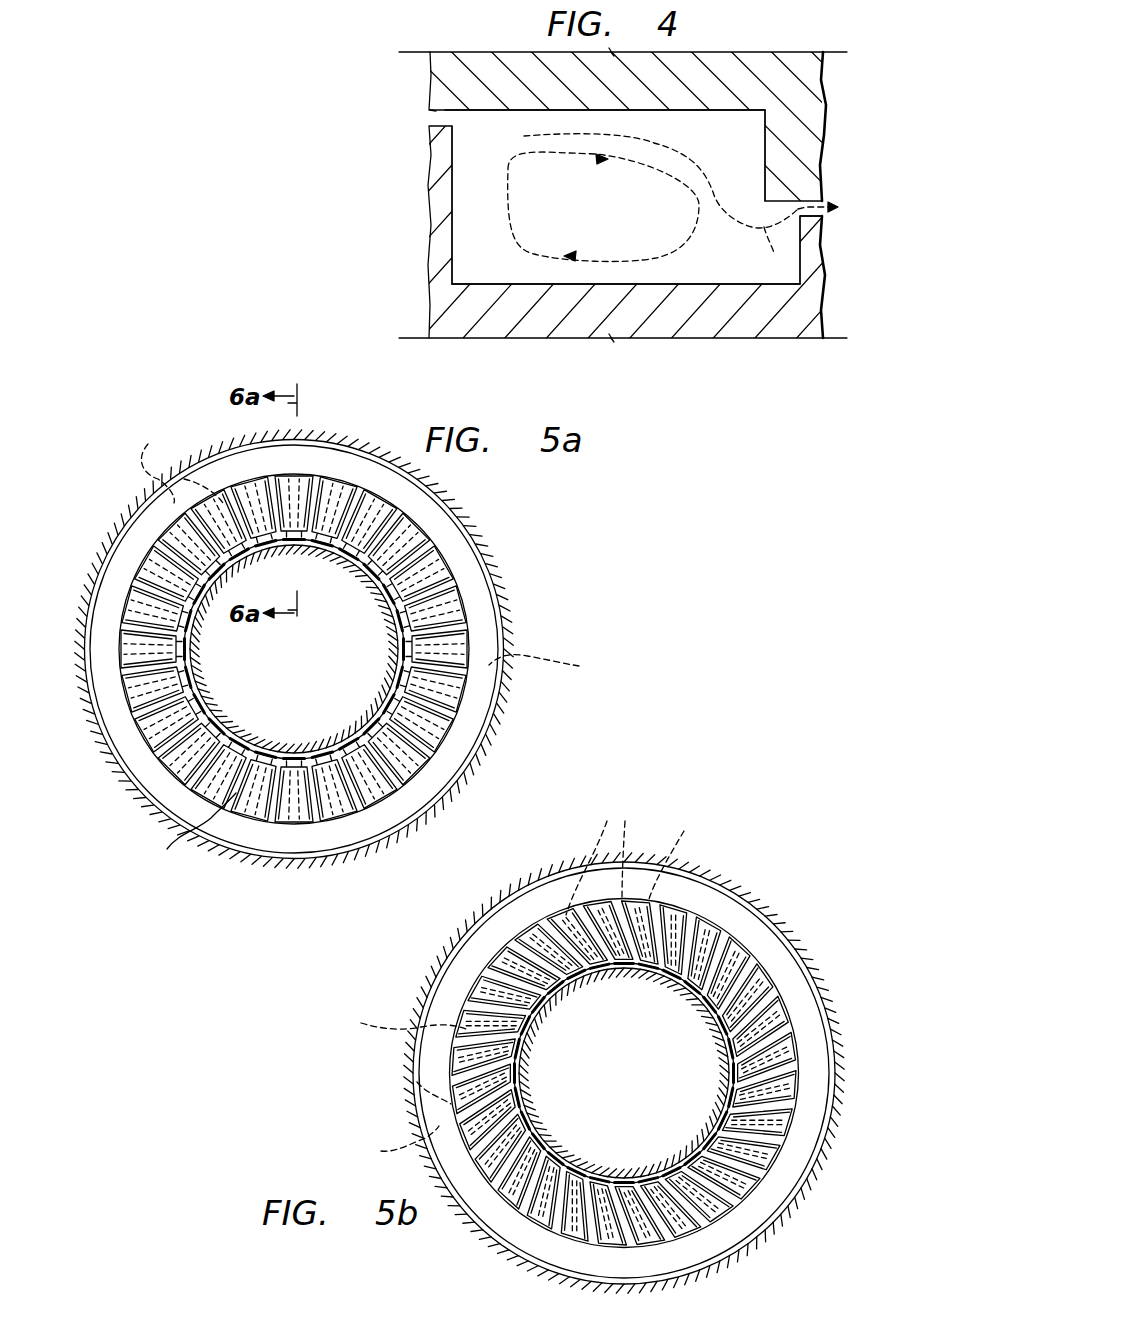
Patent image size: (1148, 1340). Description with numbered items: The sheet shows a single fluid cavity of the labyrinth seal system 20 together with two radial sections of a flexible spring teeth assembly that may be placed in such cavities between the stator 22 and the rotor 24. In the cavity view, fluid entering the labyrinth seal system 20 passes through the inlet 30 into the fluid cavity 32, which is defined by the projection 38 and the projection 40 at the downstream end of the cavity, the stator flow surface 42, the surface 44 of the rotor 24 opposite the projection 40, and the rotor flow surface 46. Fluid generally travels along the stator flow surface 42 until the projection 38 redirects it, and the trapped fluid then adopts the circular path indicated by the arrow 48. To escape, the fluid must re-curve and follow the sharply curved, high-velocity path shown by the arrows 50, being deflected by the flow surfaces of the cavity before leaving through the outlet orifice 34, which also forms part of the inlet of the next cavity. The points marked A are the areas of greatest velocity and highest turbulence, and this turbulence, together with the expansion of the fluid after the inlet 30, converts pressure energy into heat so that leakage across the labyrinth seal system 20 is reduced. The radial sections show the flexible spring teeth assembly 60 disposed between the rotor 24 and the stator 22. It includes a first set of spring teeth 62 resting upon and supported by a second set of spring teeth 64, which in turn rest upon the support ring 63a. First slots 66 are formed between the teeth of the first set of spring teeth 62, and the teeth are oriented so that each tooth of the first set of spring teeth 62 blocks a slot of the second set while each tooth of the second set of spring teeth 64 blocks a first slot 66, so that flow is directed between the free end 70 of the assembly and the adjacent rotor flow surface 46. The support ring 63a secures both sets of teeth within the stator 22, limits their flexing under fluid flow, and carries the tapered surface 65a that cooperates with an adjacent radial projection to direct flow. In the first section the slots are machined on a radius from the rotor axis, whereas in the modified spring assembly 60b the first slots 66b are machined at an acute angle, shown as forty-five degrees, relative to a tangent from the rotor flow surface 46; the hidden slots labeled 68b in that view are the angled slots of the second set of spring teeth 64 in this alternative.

In FIG. 4, the labyrinth seal system 20 is at (764, 356).
In FIG. 4, the stator 22 is at (750, 56).
In FIG. 5A, the stator 22 is at (497, 723).
In FIG. 5B, the stator 22 is at (839, 1078).
In FIG. 4, the rotor 24 is at (684, 339).
In FIG. 5A, the rotor 24 is at (278, 662).
In FIG. 5B, the rotor 24 is at (608, 1082).
In FIG. 4, the inlet 30 is at (429, 110).
In FIG. 4, the fluid cavity 32 is at (550, 209).
In FIG. 4, the outlet orifice 34 is at (825, 197).
In FIG. 4, the projection 38 is at (764, 136).
In FIG. 4, the projection 40 is at (806, 251).
In FIG. 4, the stator flow surface 42 is at (486, 111).
In FIG. 4, the surface 44 is at (451, 199).
In FIG. 4, the rotor flow surface 46 is at (487, 283).
In FIG. 5A, the rotor flow surface 46 is at (323, 543).
In FIG. 5B, the rotor flow surface 46 is at (653, 975).
In FIG. 4, the arrow 48 is at (622, 256).
In FIG. 4, the arrows 50 is at (744, 227).
In FIG. 5A, the flexible spring teeth assembly 60 is at (559, 516).
In FIG. 5B, the modified spring assembly 60b is at (772, 868).
In FIG. 5A, the first set of spring teeth 62 is at (309, 477).
In FIG. 5B, the first set of spring teeth 62 is at (689, 899).
In FIG. 5A, the support ring 63a is at (486, 568).
In FIG. 5B, the support ring 63a is at (820, 988).
In FIG. 5A, the second set of spring teeth 64 is at (369, 548).
In FIG. 5B, the second set of spring teeth 64 is at (516, 917).
In FIG. 5A, the tapered surface 65a is at (434, 781).
In FIG. 5B, the tapered surface 65a is at (814, 1141).
In FIG. 5A, the first slots 66 is at (404, 513).
In FIG. 5B, the first slots 66b is at (540, 933).
In FIG. 5B, the hidden passages 68b is at (489, 980).
In FIG. 5A, the free end 70 is at (399, 635).
In FIG. 5B, the free end 70 is at (734, 1063).